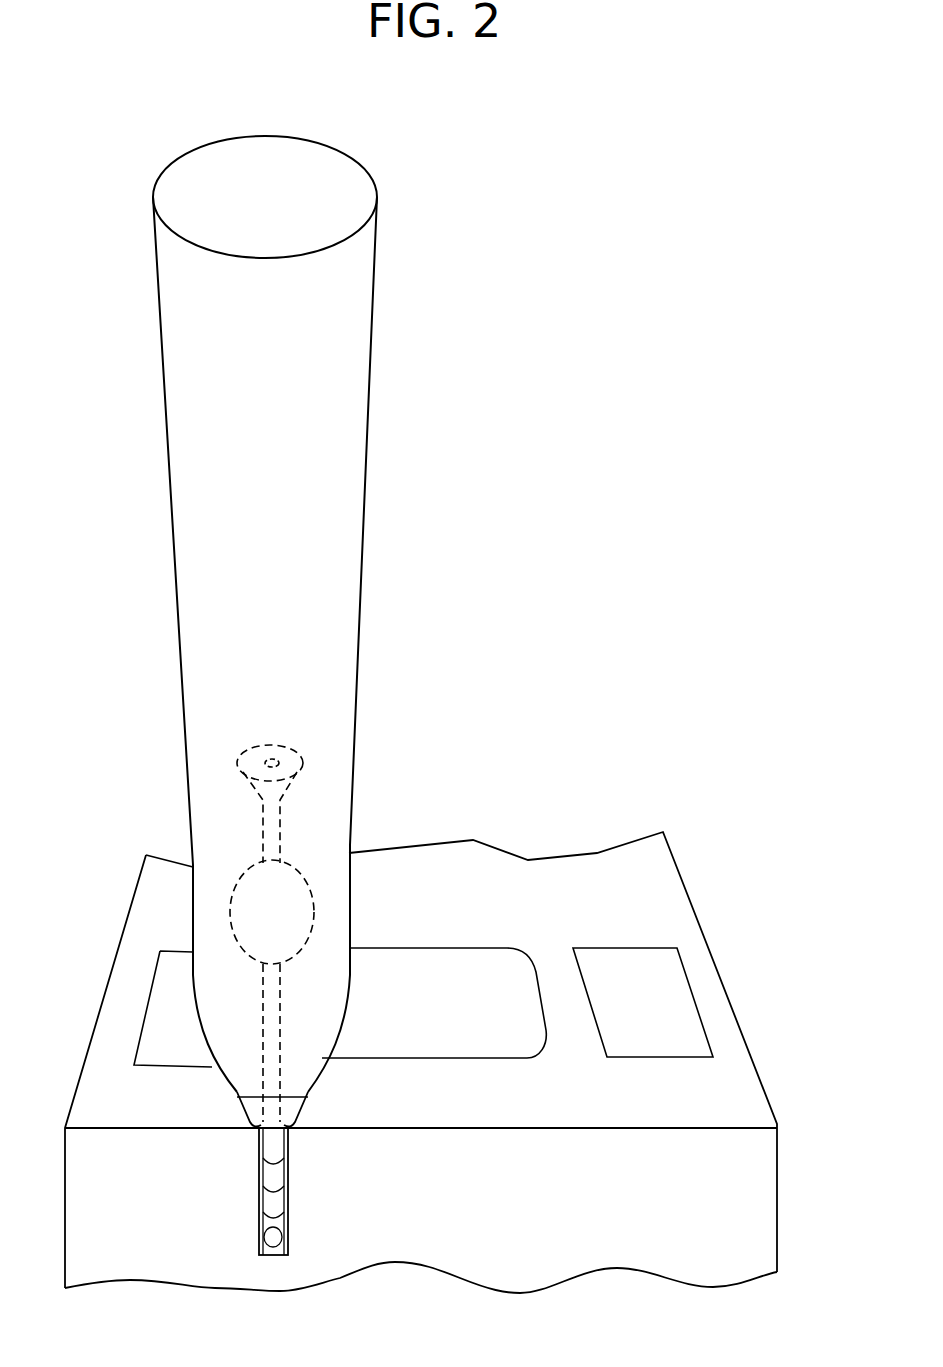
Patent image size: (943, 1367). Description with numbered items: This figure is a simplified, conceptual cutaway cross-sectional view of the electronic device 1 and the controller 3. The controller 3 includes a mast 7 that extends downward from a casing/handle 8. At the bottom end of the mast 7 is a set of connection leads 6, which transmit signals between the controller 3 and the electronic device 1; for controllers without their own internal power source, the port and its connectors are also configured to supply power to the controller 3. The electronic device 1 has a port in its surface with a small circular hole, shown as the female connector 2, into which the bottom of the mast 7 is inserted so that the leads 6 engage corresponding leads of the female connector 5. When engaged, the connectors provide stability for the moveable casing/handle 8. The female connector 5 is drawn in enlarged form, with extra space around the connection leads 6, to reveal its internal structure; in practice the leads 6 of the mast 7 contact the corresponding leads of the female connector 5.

The electronic device 1 is at (566, 822).
The female connector 2 is at (300, 1113).
The controller 3 is at (146, 531).
The female connector 5 is at (288, 1195).
The connection leads 6 is at (259, 1165).
The mast 7 is at (272, 1060).
The casing/handle 8 is at (308, 388).